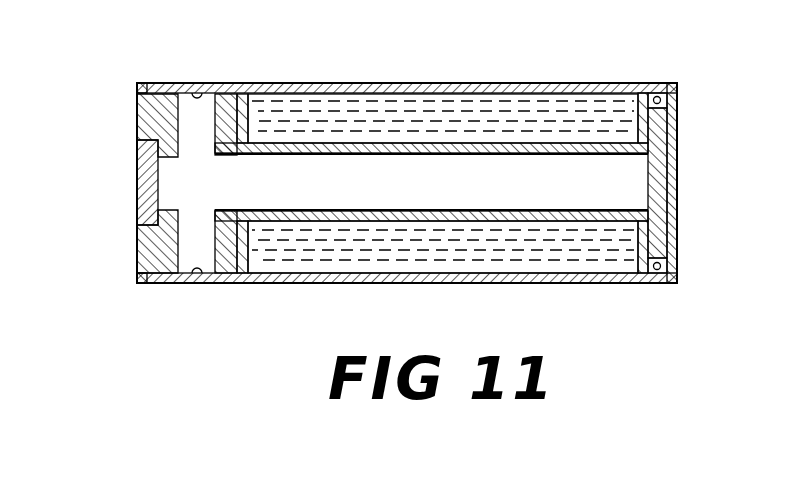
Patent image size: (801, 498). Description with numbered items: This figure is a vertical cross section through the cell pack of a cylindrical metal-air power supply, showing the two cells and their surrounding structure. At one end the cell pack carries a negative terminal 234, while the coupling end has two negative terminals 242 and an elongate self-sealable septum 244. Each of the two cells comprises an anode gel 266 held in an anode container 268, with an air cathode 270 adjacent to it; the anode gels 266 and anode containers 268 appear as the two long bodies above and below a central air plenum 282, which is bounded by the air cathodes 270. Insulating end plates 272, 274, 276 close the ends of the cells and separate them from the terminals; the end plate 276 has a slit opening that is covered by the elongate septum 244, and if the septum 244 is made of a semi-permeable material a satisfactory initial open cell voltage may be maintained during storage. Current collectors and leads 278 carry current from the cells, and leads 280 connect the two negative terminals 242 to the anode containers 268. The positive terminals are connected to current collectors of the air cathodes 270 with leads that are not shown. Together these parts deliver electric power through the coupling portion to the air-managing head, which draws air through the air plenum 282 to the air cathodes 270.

The negative terminal 234 is at (678, 128).
The negative terminals 242 is at (137, 83).
The elongate self-sealable septum 244 is at (145, 185).
The anode gels 266 is at (407, 115).
The anode containers 268 is at (524, 88).
The air cathodes 270 is at (536, 211).
The insulating end plate 272 is at (660, 185).
The insulating end plate 274 is at (216, 144).
The insulating end plate 276 is at (152, 127).
The current collectors and leads 278 is at (658, 95).
The leads 280 is at (204, 97).
The air plenum 282 is at (389, 197).